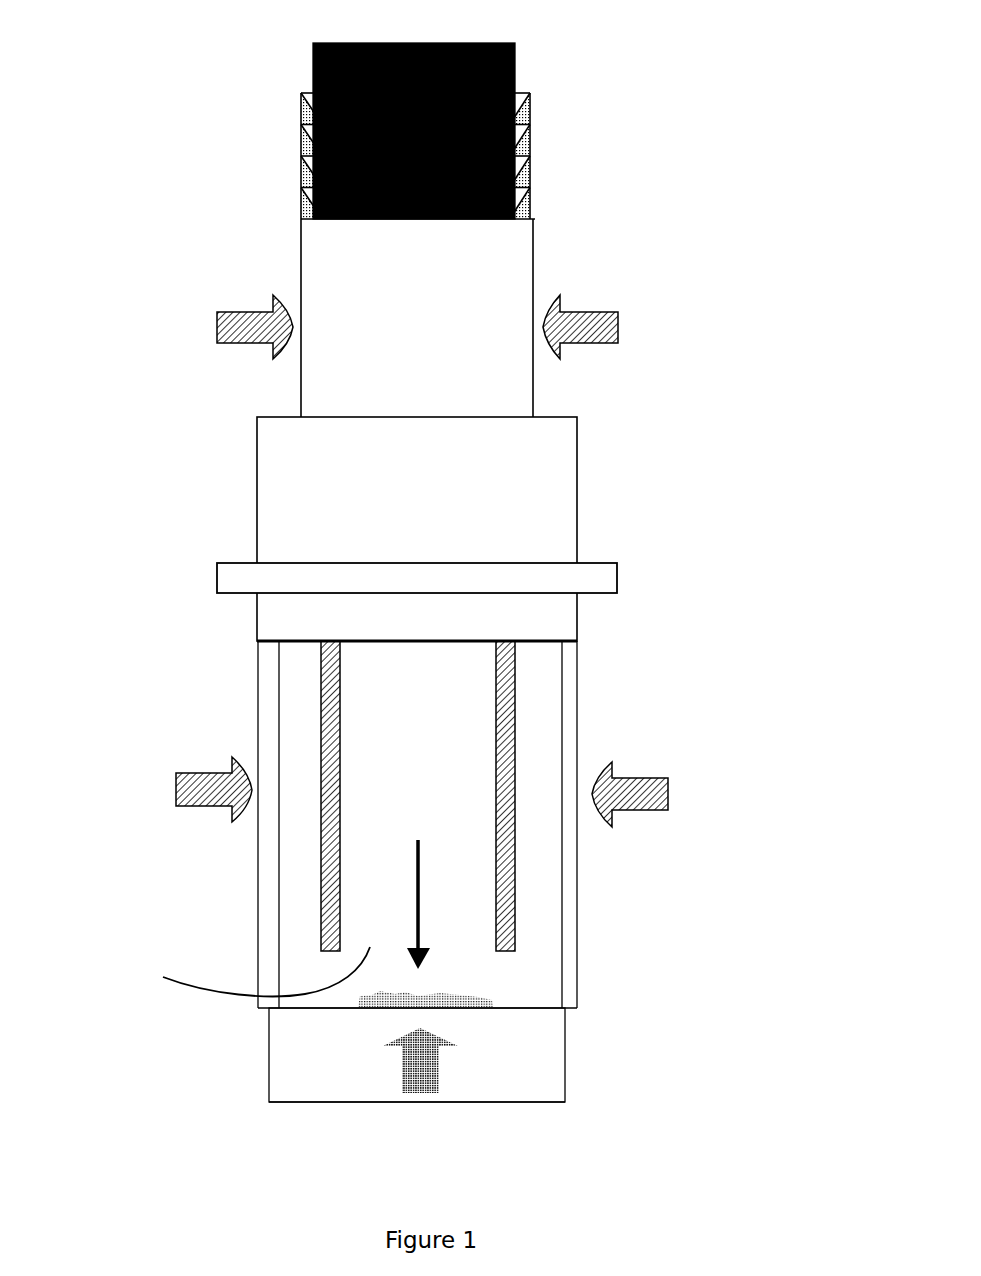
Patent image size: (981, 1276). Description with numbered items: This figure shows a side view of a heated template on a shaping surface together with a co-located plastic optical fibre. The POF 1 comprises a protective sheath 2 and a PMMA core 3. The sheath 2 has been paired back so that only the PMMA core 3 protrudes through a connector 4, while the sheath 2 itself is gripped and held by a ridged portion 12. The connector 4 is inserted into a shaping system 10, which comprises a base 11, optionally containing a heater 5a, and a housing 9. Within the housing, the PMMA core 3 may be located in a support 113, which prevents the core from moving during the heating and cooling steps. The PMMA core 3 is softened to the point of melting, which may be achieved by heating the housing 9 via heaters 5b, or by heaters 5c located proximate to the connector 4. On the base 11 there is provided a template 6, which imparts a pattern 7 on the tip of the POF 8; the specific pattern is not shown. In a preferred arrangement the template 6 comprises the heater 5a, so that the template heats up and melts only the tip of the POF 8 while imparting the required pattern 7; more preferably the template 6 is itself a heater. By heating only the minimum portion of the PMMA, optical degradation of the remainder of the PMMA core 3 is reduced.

The POF 1 is at (585, 59).
The protective sheath 2 is at (313, 73).
The ridged portion 12 is at (313, 173).
The heaters 5c is at (222, 326).
The connector 4 is at (547, 459).
The housing 9 is at (567, 713).
The support 113 is at (327, 685).
The tip of the POF 8 is at (490, 937).
The PMMA core 3 is at (413, 739).
The heaters 5b is at (175, 785).
The pattern 7 is at (247, 971).
The template 6 is at (448, 997).
The base 11 is at (507, 1057).
The shaping system 10 is at (575, 1080).
The heater 5a is at (420, 1075).